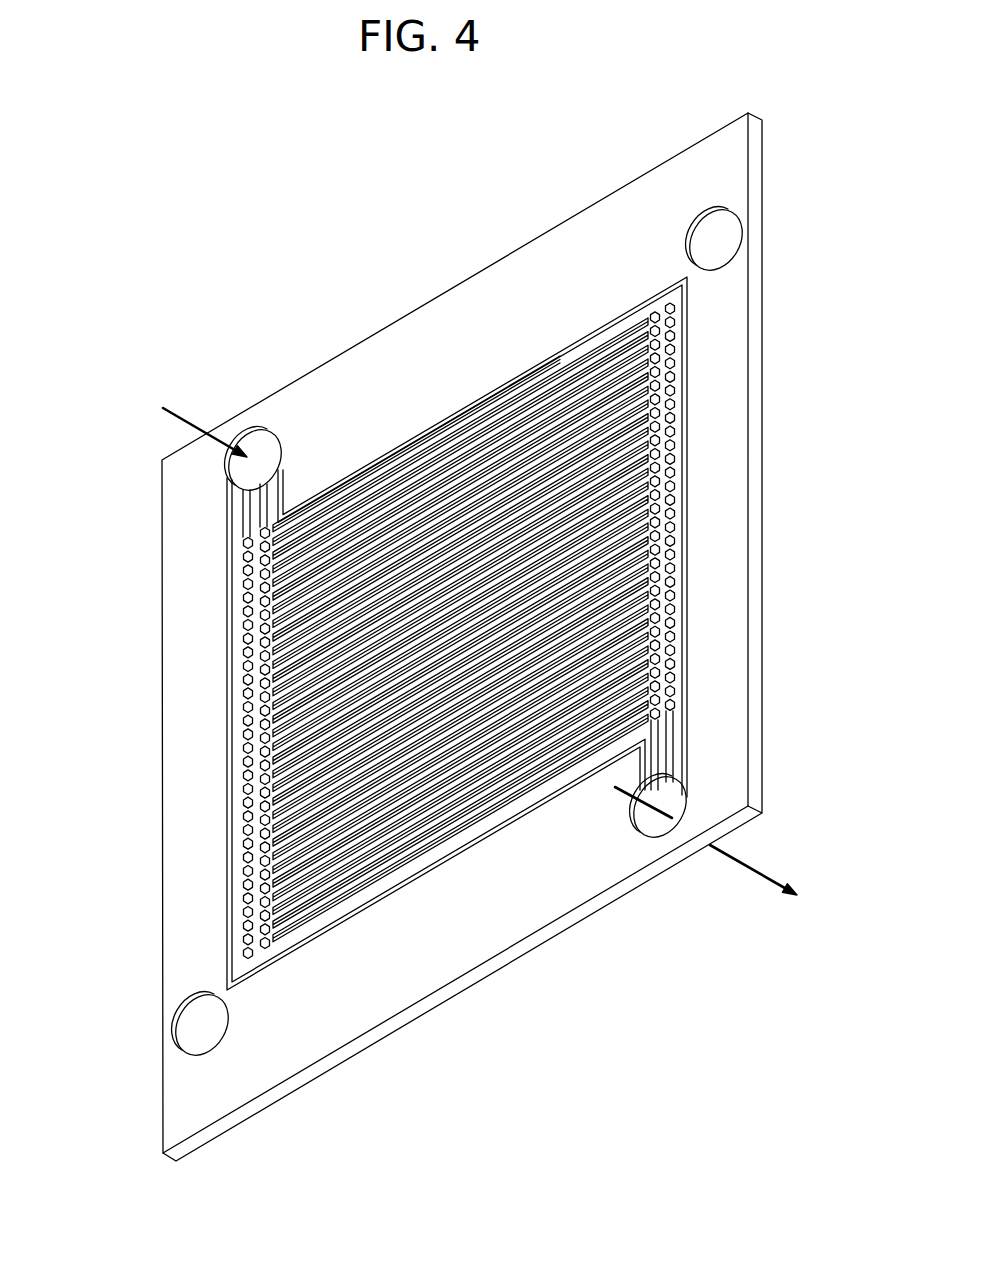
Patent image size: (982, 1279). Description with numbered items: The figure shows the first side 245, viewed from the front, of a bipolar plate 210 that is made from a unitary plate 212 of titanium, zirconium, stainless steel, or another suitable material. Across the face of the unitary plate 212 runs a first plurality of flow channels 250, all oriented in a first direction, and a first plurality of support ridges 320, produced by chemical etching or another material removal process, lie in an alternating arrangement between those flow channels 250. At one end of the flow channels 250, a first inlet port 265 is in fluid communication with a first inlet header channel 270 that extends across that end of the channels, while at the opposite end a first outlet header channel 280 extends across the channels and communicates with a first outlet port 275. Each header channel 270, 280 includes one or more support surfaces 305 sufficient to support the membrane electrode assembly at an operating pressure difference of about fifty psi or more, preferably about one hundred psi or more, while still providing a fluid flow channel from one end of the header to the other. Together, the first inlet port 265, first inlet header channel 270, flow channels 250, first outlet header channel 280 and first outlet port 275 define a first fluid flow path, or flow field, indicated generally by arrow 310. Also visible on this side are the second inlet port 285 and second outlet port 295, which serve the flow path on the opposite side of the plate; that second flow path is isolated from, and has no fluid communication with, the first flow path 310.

The bipolar plate 210 is at (279, 240).
The unitary plate 212 is at (622, 182).
The first side 245 is at (470, 299).
The first plurality of flow channels 250 is at (405, 846).
The first inlet port 265 is at (200, 476).
The first inlet header channel 270 is at (240, 828).
The first outlet port 275 is at (643, 837).
The first outlet header channel 280 is at (680, 590).
The second inlet port 285 is at (700, 226).
The second outlet port 295 is at (187, 1057).
The support surface 305 is at (248, 582).
The first fluid flow path 310 is at (190, 424).
The first plurality of support ridges 320 is at (450, 420).